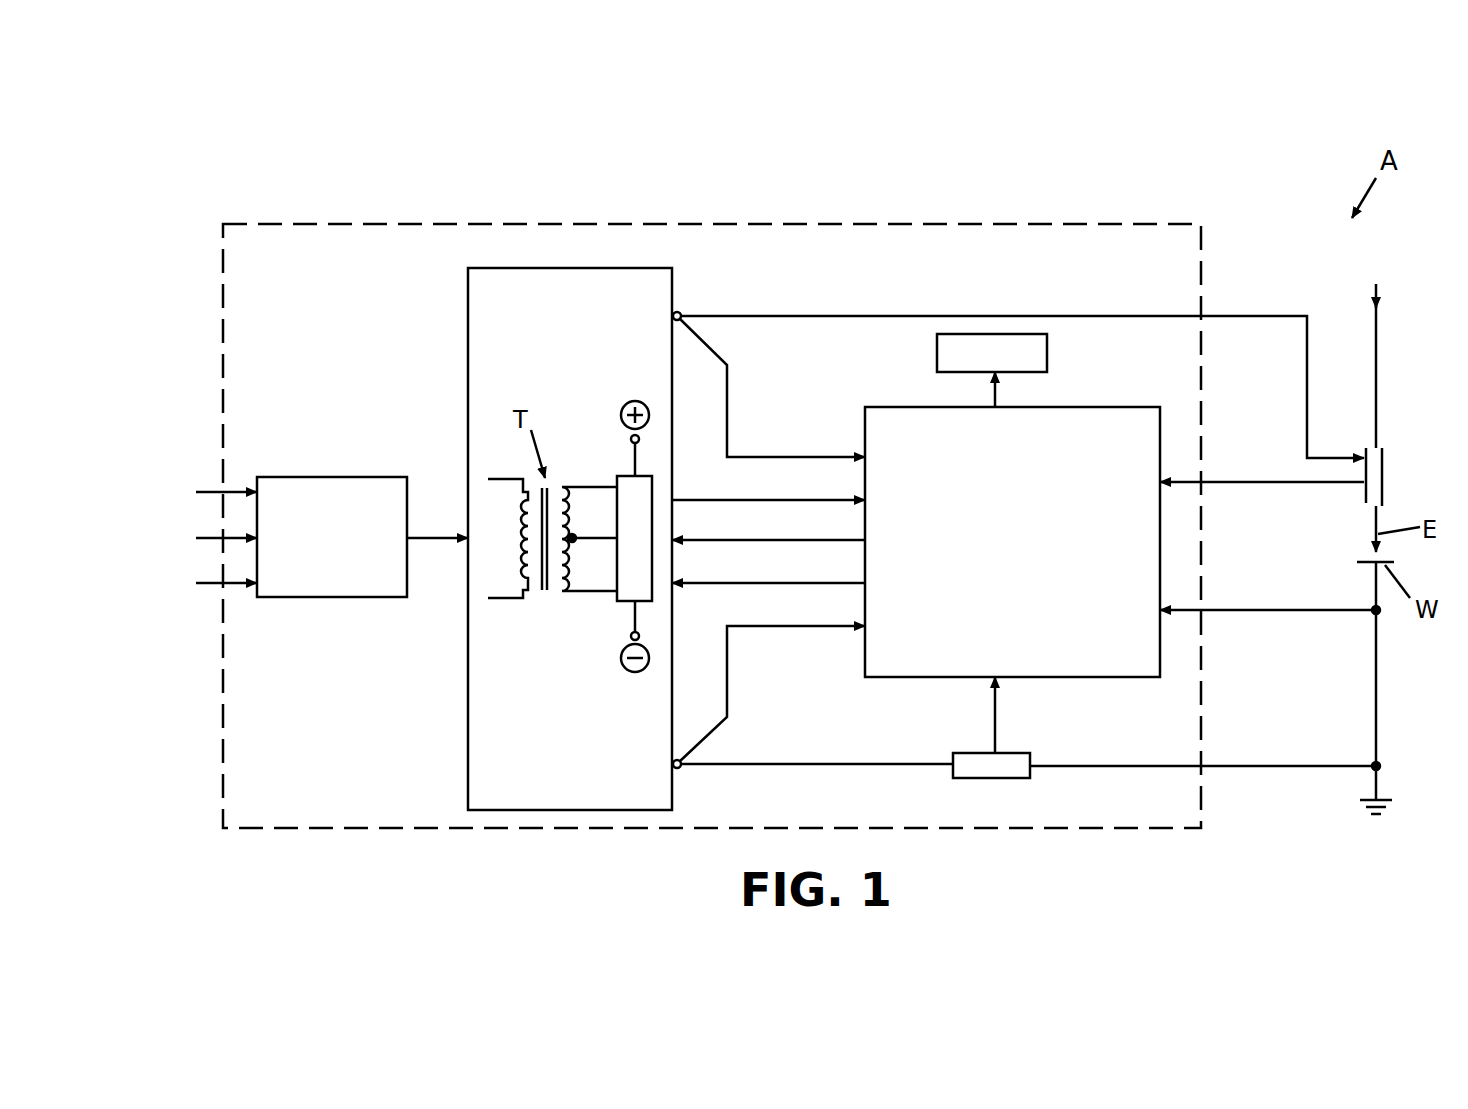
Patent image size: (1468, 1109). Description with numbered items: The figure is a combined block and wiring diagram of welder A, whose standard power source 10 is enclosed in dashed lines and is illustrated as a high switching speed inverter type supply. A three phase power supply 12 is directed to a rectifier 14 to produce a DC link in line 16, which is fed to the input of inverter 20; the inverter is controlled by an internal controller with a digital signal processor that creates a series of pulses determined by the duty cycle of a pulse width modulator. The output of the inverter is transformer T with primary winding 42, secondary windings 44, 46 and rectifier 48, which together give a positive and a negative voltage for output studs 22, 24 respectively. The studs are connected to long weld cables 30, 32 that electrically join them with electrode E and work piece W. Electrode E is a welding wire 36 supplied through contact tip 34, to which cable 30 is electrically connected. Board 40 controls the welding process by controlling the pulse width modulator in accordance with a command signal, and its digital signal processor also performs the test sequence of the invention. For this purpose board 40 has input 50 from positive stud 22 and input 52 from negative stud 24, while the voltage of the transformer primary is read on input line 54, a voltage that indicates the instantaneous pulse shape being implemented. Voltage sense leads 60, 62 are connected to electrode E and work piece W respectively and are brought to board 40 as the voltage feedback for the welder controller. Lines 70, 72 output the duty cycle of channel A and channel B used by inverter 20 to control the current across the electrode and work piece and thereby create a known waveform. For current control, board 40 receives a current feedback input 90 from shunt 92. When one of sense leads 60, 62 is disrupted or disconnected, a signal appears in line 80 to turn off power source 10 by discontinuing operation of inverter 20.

The power source 10 is at (1120, 200).
The three phase power supply 12 is at (196, 480).
The rectifier 14 is at (350, 476).
The line 16 is at (435, 540).
The inverter 20 is at (523, 266).
The output stud 22 is at (681, 312).
The output stud 24 is at (681, 768).
The weld cable 30 is at (1257, 316).
The weld cable 32 is at (1240, 766).
The contact tip 34 is at (1386, 470).
The welding wire 36 is at (1380, 320).
The board 40 is at (1080, 405).
The primary winding 42 is at (521, 578).
The secondary winding 44 is at (565, 496).
The secondary winding 46 is at (562, 582).
The rectifier 48 is at (652, 567).
The input 50 is at (788, 455).
The input 52 is at (810, 628).
The input line 54 is at (718, 497).
The voltage sense lead 60 is at (1248, 480).
The voltage sense lead 62 is at (1288, 612).
The line 70 is at (748, 540).
The line 72 is at (737, 586).
The line 80 is at (993, 394).
The current feedback input 90 is at (997, 722).
The shunt 92 is at (1013, 778).